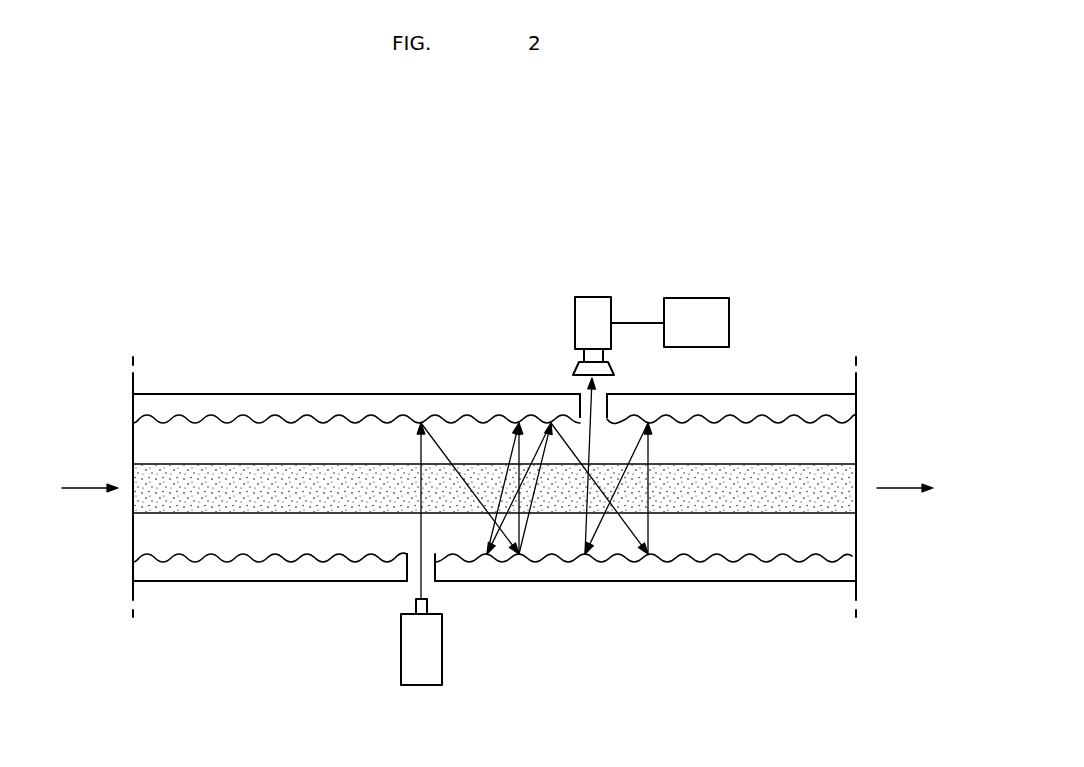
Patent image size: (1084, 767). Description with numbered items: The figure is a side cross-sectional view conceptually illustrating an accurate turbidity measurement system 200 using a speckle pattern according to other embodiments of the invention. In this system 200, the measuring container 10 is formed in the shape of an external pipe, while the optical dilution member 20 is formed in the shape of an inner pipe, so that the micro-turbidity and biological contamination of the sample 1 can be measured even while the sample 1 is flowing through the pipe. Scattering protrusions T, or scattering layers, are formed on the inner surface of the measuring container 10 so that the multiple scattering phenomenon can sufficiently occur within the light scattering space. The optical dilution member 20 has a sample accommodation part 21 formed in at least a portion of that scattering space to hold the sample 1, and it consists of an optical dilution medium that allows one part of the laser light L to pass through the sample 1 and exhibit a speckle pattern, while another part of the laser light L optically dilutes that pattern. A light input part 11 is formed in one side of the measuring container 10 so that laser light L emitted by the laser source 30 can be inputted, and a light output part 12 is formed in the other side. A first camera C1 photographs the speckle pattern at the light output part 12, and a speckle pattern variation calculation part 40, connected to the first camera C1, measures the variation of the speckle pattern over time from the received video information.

The accurate turbidity measurement system 200 is at (153, 258).
The optical dilution member 20 is at (838, 532).
The measuring container 10 is at (357, 400).
The scattering protrusions T is at (192, 420).
The sample accommodation part 21 is at (800, 464).
The sample 1 is at (158, 495).
The light input part 11 is at (407, 566).
The light output part 12 is at (584, 404).
The laser light L is at (420, 527).
The laser source 30 is at (421, 685).
The first camera C1 is at (593, 297).
The speckle pattern variation calculation part 40 is at (697, 298).